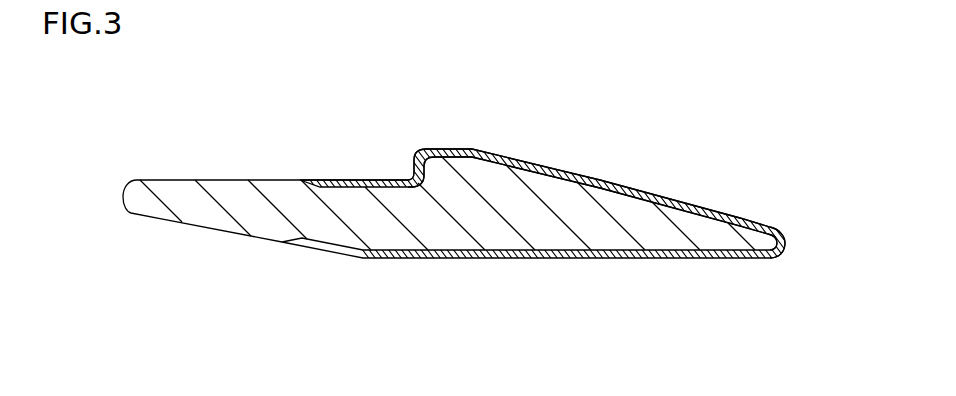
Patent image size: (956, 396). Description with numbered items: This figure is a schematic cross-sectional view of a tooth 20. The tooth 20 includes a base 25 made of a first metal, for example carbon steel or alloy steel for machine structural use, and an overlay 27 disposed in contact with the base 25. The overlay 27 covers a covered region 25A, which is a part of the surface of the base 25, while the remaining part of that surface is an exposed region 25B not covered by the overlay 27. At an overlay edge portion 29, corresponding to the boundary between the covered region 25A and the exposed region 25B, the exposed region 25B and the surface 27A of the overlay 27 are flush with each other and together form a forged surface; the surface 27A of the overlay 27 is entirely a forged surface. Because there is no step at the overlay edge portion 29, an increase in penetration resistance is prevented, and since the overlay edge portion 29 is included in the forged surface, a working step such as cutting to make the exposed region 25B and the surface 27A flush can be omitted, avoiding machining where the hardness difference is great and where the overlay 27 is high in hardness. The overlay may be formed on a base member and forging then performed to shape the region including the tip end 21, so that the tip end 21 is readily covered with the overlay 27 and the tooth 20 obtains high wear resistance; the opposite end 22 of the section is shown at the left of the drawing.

The tooth 20 is at (662, 122).
The tip end 21 is at (788, 243).
The base end portion 22 is at (124, 200).
The base 25 is at (207, 197).
The covered region 25A is at (585, 177).
The exposed region 25B is at (252, 180).
The overlay 27 is at (445, 150).
The surface of the overlay 27A is at (525, 162).
The overlay edge portion 29 is at (302, 177).